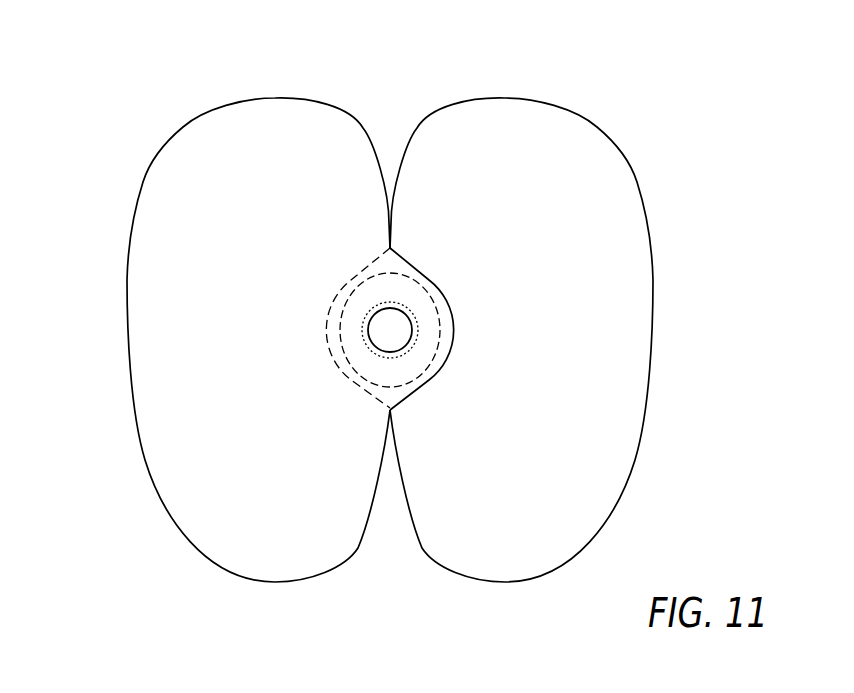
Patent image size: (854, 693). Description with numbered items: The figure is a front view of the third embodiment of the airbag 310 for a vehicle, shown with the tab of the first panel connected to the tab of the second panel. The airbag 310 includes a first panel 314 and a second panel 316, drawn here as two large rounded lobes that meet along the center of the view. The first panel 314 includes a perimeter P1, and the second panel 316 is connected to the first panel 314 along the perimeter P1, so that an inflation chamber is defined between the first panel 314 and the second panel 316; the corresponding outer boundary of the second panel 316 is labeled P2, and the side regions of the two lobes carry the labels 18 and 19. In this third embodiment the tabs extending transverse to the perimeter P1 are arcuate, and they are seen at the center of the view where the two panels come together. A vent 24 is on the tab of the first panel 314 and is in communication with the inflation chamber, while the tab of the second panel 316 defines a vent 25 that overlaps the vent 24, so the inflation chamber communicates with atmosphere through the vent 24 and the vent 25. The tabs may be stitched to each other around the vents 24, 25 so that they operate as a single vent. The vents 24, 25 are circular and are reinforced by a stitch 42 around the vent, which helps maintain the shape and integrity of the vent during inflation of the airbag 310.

The airbag 310 is at (612, 68).
The perimeter of the first panel P1 is at (618, 148).
The second pad P2 is at (162, 148).
The first lobe 18 is at (630, 285).
The second lobe 19 is at (138, 285).
The first panel 314 is at (632, 390).
The second panel 316 is at (138, 392).
The vent 24 is at (379, 348).
The vent 25 is at (390, 330).
The stitch 42 is at (418, 323).